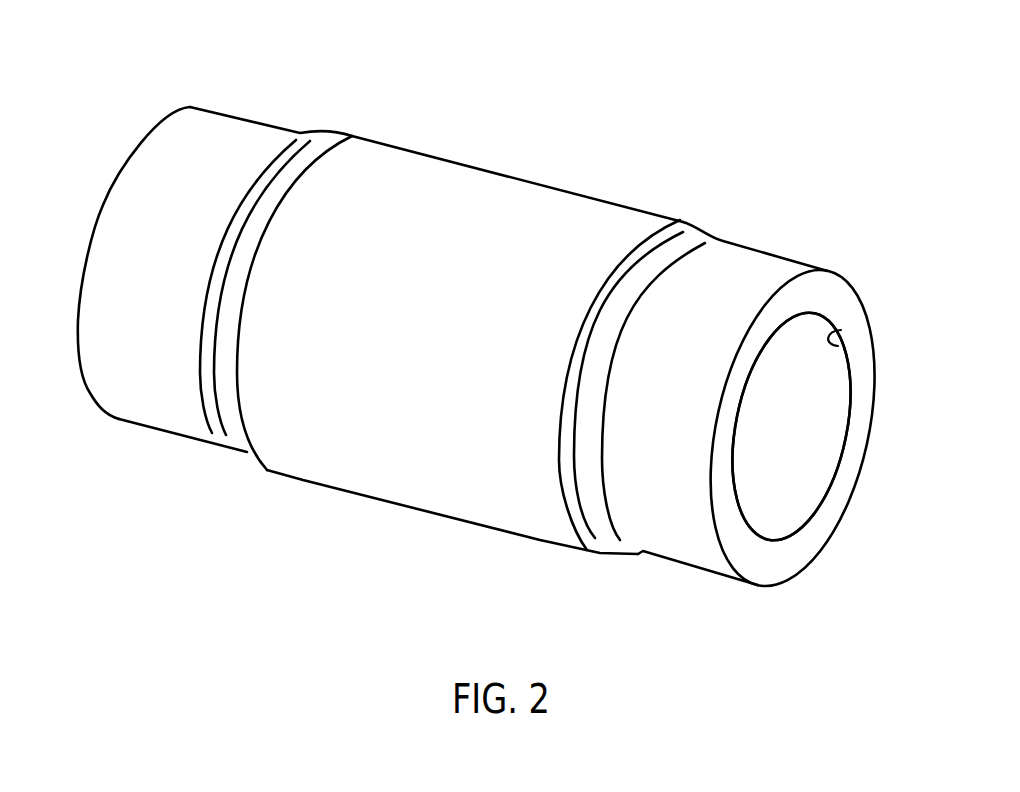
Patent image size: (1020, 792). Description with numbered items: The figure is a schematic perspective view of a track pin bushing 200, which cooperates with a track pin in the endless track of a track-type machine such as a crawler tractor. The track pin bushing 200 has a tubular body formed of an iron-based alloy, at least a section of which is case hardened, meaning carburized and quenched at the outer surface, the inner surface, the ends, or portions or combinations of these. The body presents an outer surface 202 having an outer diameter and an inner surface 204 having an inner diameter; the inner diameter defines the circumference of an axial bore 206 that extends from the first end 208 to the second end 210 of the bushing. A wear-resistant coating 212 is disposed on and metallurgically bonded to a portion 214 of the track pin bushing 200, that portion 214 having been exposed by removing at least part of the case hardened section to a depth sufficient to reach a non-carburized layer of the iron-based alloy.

The track pin bushing 200 is at (477, 344).
The outer surface 202 is at (744, 269).
The inner surface 204 is at (838, 346).
The axial bore 206 is at (800, 431).
The first end 208 is at (816, 450).
The second end 210 is at (77, 250).
The wear-resistant coating 212 is at (403, 505).
The portion 214 is at (557, 604).